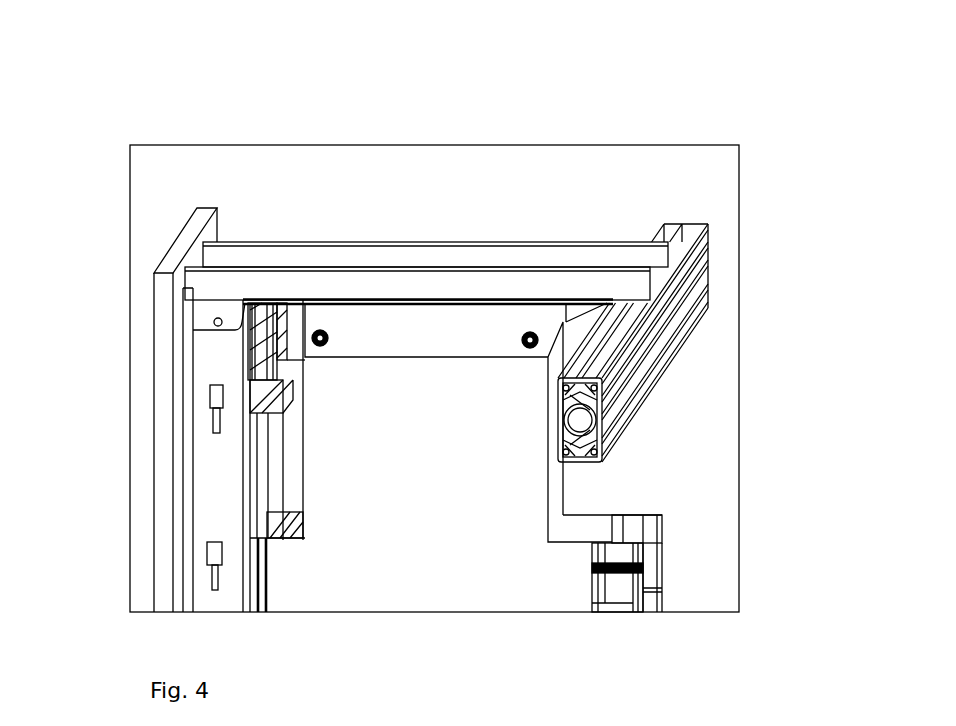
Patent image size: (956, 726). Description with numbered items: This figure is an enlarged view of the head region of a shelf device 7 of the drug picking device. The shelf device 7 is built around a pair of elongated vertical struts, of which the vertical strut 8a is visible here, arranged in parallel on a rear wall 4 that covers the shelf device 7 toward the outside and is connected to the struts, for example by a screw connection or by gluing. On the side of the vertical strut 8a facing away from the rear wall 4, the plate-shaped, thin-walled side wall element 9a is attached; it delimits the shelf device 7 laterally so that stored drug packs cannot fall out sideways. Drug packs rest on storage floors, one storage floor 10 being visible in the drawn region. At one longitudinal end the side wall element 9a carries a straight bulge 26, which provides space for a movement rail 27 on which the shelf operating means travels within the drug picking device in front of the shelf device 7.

The shelf device 7 is at (349, 204).
The rear wall 4 is at (170, 258).
The vertical strut 8a is at (220, 482).
The side wall element 9a is at (348, 580).
The movement rail 27 is at (702, 276).
The bulge 26 is at (598, 490).
The storage floor 10 is at (660, 549).